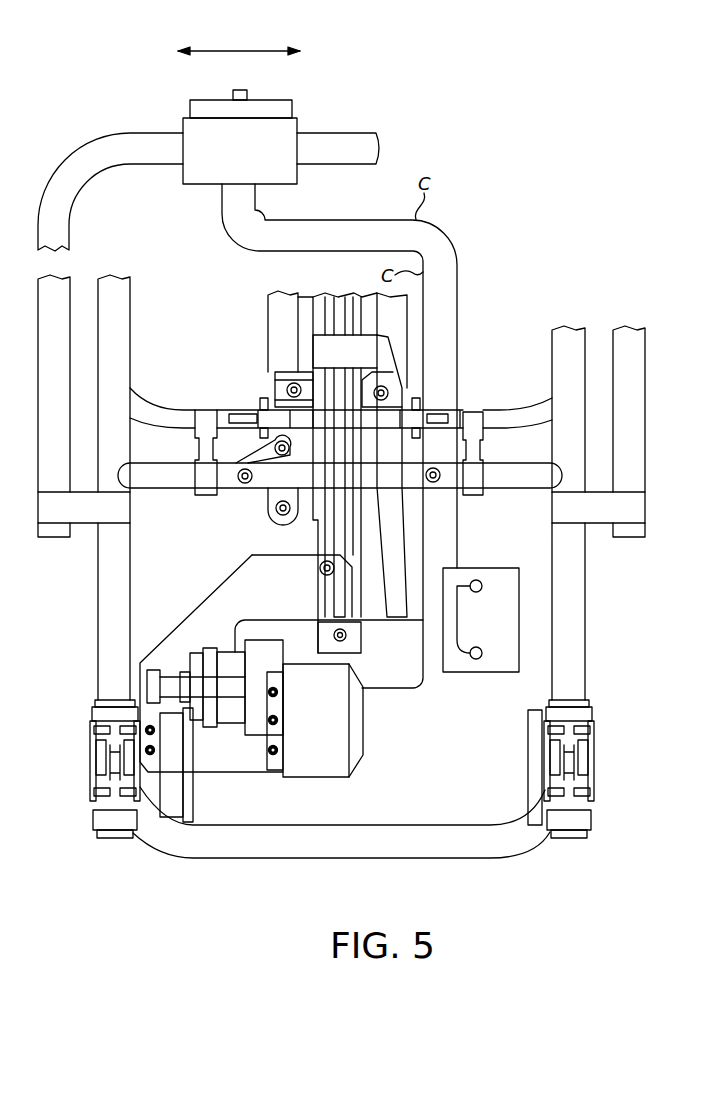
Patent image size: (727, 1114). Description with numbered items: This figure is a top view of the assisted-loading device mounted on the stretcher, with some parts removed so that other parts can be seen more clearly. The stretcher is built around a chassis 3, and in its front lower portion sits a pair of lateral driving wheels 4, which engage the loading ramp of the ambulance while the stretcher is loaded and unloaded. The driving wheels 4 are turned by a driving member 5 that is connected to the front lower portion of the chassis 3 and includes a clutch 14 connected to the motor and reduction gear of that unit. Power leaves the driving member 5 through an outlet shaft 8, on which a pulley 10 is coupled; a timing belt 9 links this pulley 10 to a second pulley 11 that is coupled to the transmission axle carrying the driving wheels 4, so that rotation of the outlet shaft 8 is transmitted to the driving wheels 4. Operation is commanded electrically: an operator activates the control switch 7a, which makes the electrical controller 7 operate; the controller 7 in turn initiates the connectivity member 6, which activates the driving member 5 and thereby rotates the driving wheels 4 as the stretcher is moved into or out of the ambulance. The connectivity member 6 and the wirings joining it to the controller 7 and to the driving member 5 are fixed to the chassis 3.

The chassis 3 is at (76, 150).
The lateral driving wheels 4 is at (95, 798).
The driving member 5 is at (236, 607).
The connectivity member 6 is at (512, 648).
The controller 7 is at (277, 118).
The control switch 7a is at (240, 90).
The outlet shaft 8 is at (172, 676).
The timing belt 9 is at (175, 708).
The pulley 10 is at (177, 699).
The pulley 11 is at (170, 808).
The clutch 14 is at (233, 742).